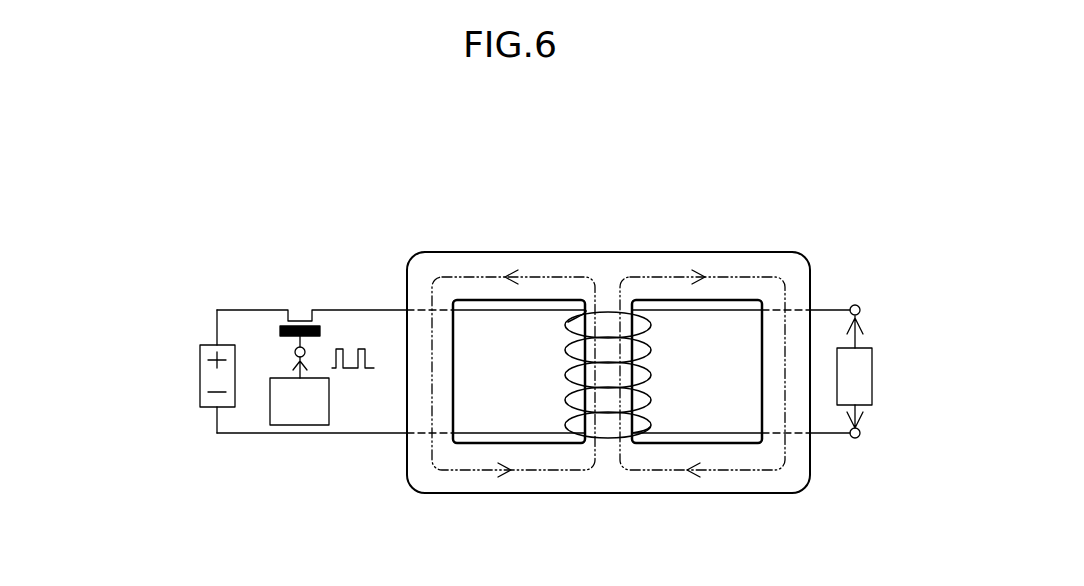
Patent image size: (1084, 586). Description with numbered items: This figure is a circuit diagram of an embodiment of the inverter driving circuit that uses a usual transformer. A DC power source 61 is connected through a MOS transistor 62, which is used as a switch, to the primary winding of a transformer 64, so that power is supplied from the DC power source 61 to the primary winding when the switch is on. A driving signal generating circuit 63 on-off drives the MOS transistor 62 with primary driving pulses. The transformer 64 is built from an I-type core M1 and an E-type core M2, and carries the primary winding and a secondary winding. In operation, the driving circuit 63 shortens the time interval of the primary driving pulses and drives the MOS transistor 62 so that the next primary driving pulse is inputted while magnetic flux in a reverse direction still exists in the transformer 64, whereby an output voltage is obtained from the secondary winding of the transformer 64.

The DC power source 61 is at (200, 372).
The MOS transistor 62 is at (302, 307).
The driving signal generating circuit 63 is at (308, 418).
The transformer 64 is at (778, 243).
The I-type core M1 is at (533, 266).
The E-type core M2 is at (600, 482).